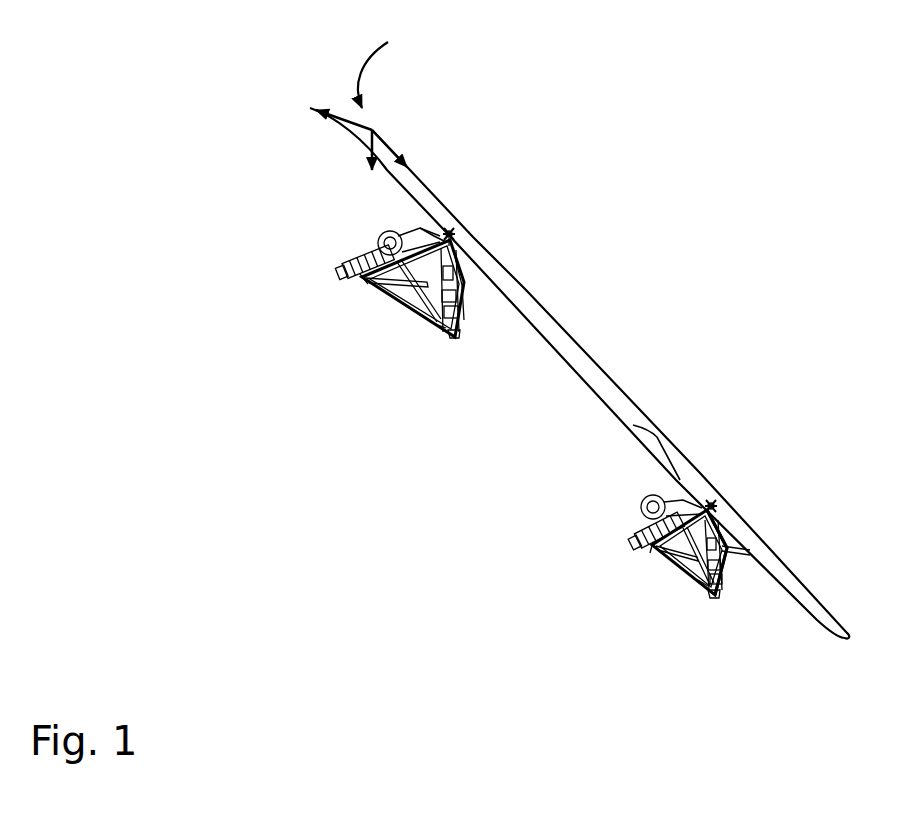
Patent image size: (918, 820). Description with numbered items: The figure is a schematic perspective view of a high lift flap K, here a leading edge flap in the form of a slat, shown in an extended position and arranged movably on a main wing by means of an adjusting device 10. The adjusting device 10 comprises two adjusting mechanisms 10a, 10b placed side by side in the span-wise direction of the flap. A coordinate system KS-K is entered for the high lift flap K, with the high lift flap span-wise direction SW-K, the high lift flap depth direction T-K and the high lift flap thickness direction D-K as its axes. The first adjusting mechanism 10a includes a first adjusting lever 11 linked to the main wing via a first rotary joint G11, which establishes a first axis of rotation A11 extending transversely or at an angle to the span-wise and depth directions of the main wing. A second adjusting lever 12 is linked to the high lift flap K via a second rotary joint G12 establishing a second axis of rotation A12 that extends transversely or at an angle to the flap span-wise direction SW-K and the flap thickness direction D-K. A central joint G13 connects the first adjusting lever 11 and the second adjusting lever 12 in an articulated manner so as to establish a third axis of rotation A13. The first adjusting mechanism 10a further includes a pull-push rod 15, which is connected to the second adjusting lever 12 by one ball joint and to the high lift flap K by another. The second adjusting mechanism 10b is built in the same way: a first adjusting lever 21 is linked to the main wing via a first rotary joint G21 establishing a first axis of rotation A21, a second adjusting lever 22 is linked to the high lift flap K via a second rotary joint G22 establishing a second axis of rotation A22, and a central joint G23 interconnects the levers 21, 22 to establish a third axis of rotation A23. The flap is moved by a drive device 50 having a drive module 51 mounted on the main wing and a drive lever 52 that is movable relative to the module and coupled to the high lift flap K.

The high lift flap K is at (639, 212).
The coordinate system for the high lift flap KS-K is at (401, 63).
The high lift flap depth direction T-K is at (332, 108).
The high lift flap thickness direction D-K is at (338, 150).
The high lift flap span-wise direction SW-K is at (421, 148).
The adjusting device 10 is at (257, 147).
The first adjusting mechanism 10a is at (553, 572).
The second adjusting mechanism 10b is at (263, 237).
The first adjusting lever 11 is at (708, 510).
The second adjusting lever 12 is at (684, 570).
The pull-push rod 15 is at (736, 553).
The first adjusting lever 21 is at (462, 285).
The second adjusting lever 22 is at (385, 305).
The drive device 50 is at (416, 227).
The drive module 51 is at (380, 250).
The drive lever 52 is at (432, 232).
The first rotary joint G11 is at (712, 503).
The second rotary joint G12 is at (632, 538).
The central joint G13 is at (716, 608).
The first axis of rotation A11 is at (722, 518).
The second axis of rotation A12 is at (650, 553).
The third axis of rotation A13 is at (702, 600).
The first rotary joint G21 is at (455, 228).
The second rotary joint G22 is at (338, 271).
The central joint G23 is at (456, 345).
The first axis of rotation A21 is at (455, 236).
The second axis of rotation A22 is at (368, 284).
The third axis of rotation A23 is at (435, 338).